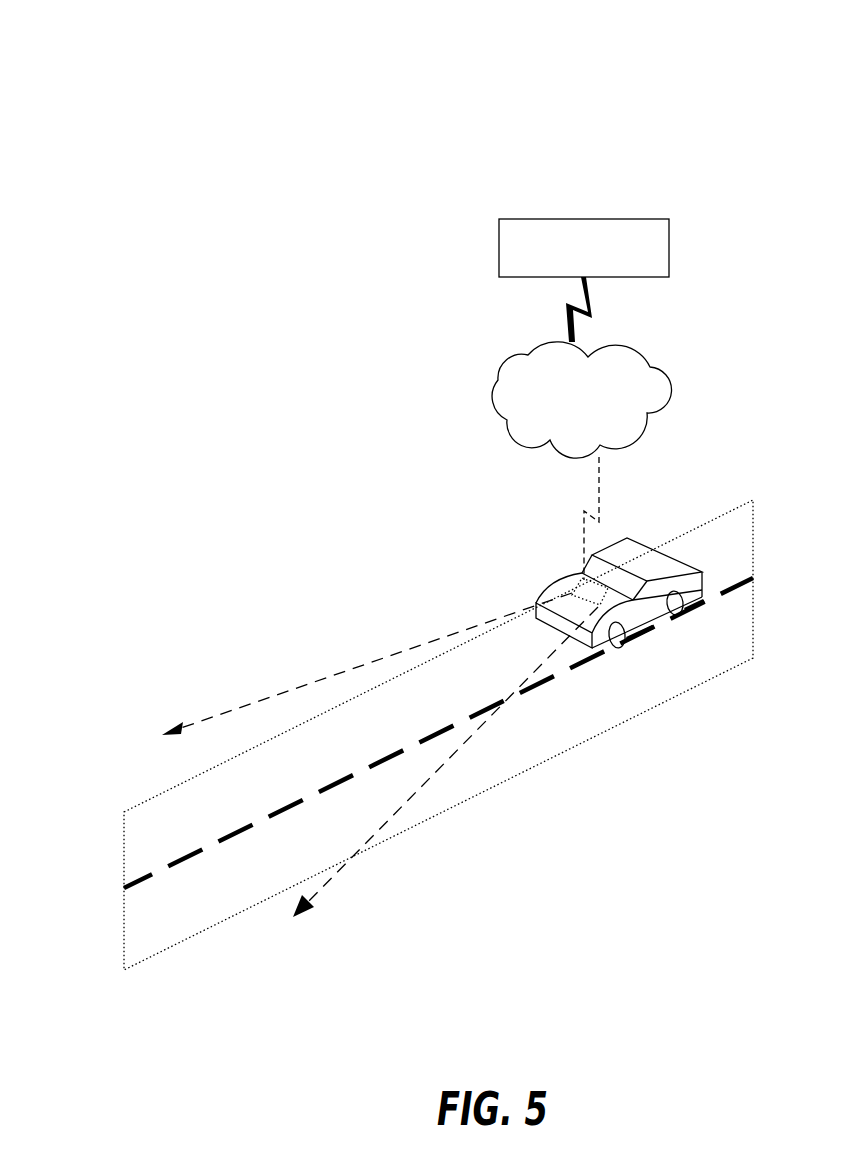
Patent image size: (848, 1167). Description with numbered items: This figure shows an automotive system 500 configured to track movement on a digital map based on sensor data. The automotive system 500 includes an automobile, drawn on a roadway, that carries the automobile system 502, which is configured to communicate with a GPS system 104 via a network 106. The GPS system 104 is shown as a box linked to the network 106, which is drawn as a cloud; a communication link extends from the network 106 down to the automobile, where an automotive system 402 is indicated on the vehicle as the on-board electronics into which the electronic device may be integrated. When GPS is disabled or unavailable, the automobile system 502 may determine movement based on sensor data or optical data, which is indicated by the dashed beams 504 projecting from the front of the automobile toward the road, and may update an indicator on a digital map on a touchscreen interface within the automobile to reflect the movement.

The automotive system 500 is at (91, 45).
The GPS system 104 is at (499, 247).
The network 106 is at (500, 366).
The automotive system 402 is at (575, 592).
The automobile system 502 is at (640, 558).
The sensor beams 504 is at (307, 683).